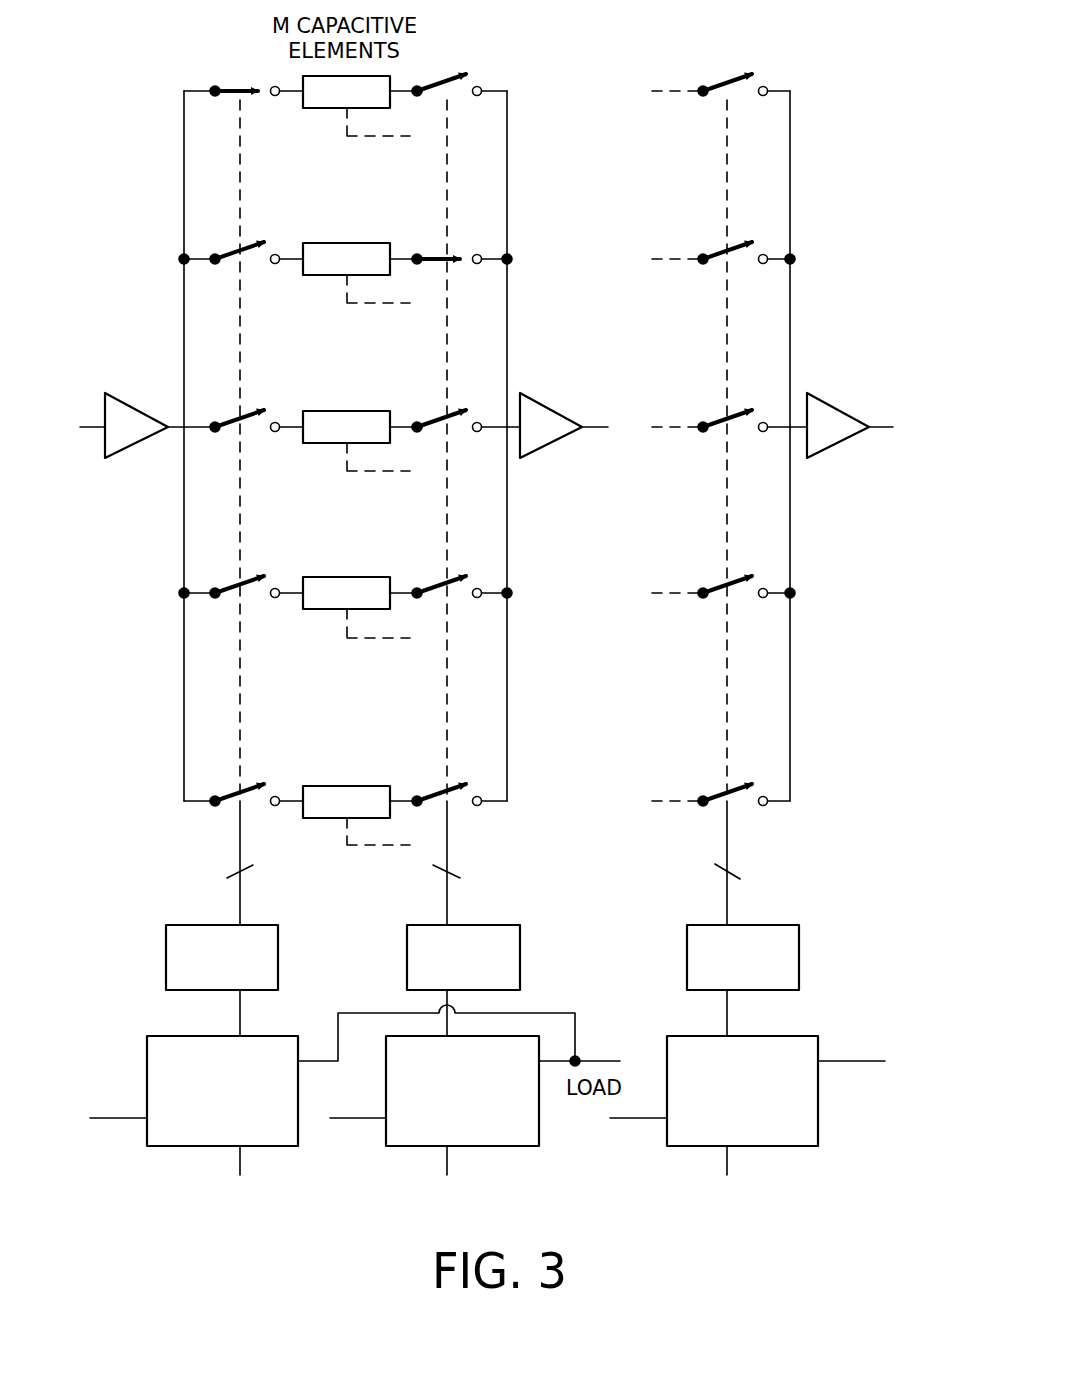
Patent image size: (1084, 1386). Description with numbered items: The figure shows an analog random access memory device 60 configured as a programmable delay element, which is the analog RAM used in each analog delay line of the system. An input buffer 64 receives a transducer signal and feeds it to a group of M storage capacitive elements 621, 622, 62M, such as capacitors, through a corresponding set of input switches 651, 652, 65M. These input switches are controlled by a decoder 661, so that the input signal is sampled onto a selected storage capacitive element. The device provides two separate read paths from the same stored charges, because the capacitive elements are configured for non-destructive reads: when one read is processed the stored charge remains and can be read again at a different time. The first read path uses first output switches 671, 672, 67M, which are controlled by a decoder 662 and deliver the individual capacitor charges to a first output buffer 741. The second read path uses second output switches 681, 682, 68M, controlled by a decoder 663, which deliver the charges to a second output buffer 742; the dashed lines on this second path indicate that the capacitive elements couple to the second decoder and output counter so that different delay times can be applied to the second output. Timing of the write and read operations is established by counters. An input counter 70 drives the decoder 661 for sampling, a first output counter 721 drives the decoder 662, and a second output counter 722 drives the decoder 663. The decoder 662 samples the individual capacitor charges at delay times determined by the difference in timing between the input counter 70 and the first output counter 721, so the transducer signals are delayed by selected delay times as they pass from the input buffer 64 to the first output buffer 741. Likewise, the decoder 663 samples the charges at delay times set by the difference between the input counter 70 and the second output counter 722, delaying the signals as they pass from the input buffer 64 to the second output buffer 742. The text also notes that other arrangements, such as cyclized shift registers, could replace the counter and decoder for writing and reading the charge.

The analog random access memory device 60 is at (528, 165).
The storage capacitive element 621 is at (323, 109).
The storage capacitive element 622 is at (323, 277).
The storage capacitive element 62M is at (323, 820).
The input buffer 64 is at (145, 409).
The input switch 651 is at (215, 89).
The input switch 652 is at (215, 257).
The input switch 65M is at (215, 799).
The decoder 661 is at (173, 924).
The decoder 662 is at (503, 924).
The decoder 663 is at (785, 924).
The first output switch 671 is at (478, 87).
The first output switch 672 is at (418, 257).
The first output switch 67M is at (417, 799).
The second output switch 681 is at (703, 89).
The second output switch 682 is at (703, 257).
The second output switch 68M is at (703, 799).
The input counter 70 is at (162, 1148).
The first output counter 721 is at (525, 1148).
The second output counter 722 is at (805, 1148).
The first output buffer 741 is at (553, 409).
The second output buffer 742 is at (837, 409).